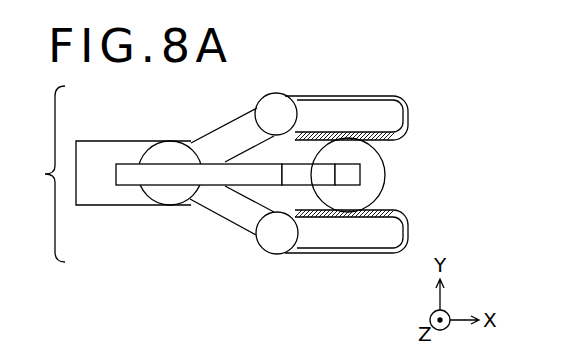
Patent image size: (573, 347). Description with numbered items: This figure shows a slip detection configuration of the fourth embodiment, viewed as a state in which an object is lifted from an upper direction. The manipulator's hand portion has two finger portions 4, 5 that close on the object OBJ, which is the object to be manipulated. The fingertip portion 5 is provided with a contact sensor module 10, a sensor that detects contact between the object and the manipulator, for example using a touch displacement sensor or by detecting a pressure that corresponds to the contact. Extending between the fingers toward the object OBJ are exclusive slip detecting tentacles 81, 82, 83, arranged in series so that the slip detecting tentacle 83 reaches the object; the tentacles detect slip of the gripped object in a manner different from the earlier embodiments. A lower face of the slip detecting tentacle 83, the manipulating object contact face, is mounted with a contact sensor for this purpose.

The slip detecting tentacle 81 is at (170, 178).
The finger portion 4 is at (230, 215).
The slip detecting tentacle 82 is at (305, 177).
The slip detecting tentacle 83 is at (347, 178).
The object OBJ is at (381, 156).
The contact sensor module 10 is at (412, 234).
The finger portion 5 is at (390, 245).